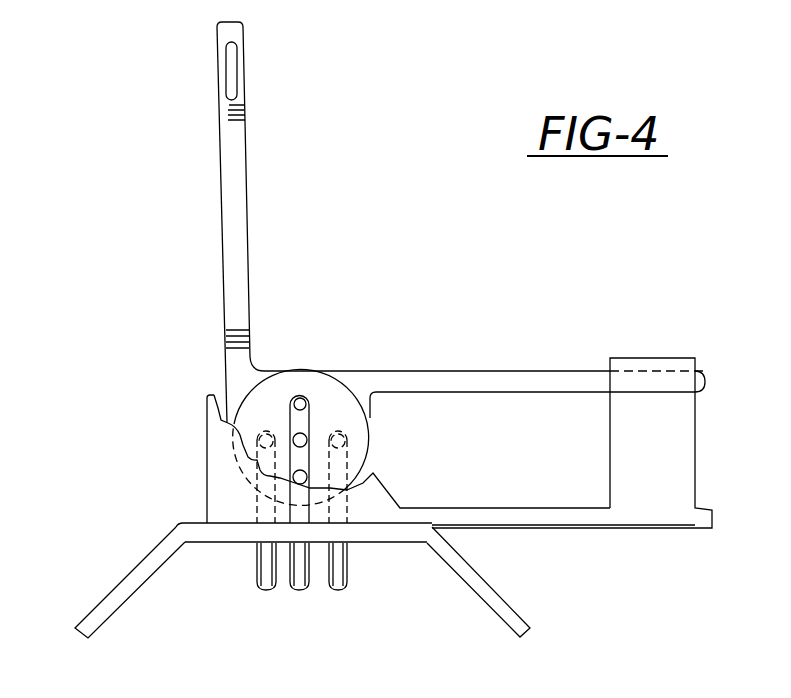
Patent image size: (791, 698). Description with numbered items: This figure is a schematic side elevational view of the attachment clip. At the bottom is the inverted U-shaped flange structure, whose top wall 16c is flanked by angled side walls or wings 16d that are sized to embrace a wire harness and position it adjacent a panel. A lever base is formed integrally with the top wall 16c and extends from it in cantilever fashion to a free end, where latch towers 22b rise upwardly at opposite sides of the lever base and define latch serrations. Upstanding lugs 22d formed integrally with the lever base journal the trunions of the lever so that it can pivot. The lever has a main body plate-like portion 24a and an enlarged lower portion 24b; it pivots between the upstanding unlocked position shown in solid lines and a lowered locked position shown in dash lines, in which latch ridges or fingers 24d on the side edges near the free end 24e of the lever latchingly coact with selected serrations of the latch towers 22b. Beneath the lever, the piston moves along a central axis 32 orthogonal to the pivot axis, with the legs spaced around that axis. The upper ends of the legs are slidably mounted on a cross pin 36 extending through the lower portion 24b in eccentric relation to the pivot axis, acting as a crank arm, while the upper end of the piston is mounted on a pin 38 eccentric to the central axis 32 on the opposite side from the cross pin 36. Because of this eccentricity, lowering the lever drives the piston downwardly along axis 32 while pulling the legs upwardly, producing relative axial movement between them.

The top wall 16c is at (193, 524).
The angled side walls or wings 16d is at (118, 585).
The latch towers 22b is at (667, 358).
The upstanding lugs 22d is at (208, 410).
The main body plate-like portion 24a is at (232, 193).
The enlarged lower portion 24b is at (370, 460).
The latch ridges or fingers 24d is at (232, 72).
The free end 24e is at (217, 25).
The central axis 32 is at (307, 438).
The cross pin 36 is at (247, 447).
The pin 38 is at (370, 422).